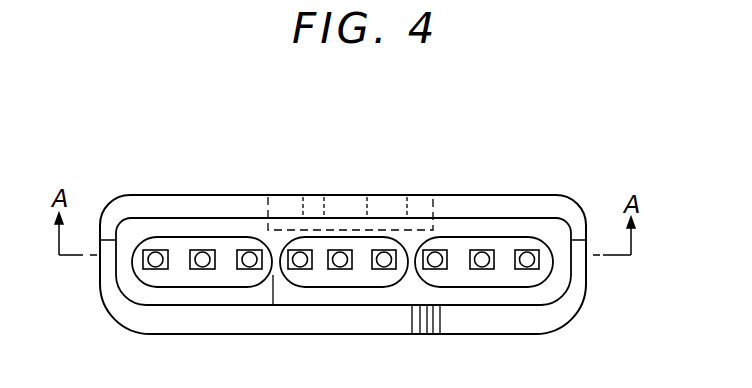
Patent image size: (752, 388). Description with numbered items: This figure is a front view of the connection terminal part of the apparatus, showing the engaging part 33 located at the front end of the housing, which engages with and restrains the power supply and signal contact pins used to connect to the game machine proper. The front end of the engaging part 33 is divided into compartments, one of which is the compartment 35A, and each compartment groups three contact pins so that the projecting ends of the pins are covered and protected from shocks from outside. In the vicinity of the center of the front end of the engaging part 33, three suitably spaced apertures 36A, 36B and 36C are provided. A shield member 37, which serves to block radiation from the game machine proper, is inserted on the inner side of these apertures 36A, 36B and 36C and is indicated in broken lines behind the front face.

The engaging part 33 is at (538, 185).
The compartment 35A is at (183, 243).
The aperture 36A is at (283, 205).
The aperture 36B is at (340, 202).
The aperture 36C is at (420, 207).
The shield member 37 is at (387, 220).